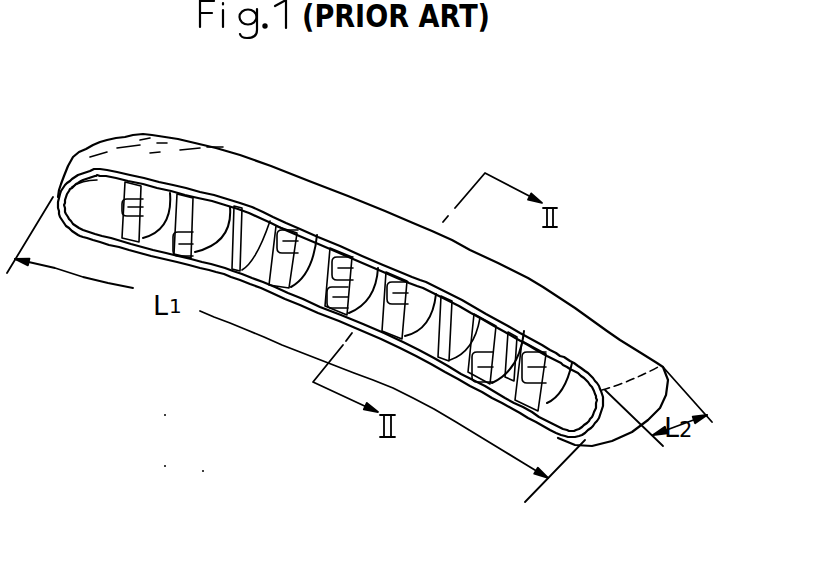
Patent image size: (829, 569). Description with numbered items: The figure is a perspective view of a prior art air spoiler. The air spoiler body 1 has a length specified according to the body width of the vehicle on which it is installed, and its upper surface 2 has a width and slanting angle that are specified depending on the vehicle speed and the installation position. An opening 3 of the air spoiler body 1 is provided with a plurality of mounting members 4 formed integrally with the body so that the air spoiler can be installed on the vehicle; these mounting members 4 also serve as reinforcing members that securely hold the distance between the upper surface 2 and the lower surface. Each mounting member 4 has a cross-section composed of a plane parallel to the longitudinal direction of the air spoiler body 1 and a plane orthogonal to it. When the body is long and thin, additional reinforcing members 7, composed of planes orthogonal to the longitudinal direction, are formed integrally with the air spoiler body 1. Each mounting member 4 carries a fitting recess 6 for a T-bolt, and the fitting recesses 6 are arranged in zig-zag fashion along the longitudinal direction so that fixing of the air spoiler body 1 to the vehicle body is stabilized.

The air spoiler body 1 is at (322, 200).
The upper surface 2 is at (230, 163).
The opening 3 is at (300, 292).
The mounting members 4 is at (187, 203).
The fitting recess 6 is at (128, 197).
The reinforcing members 7 is at (240, 213).